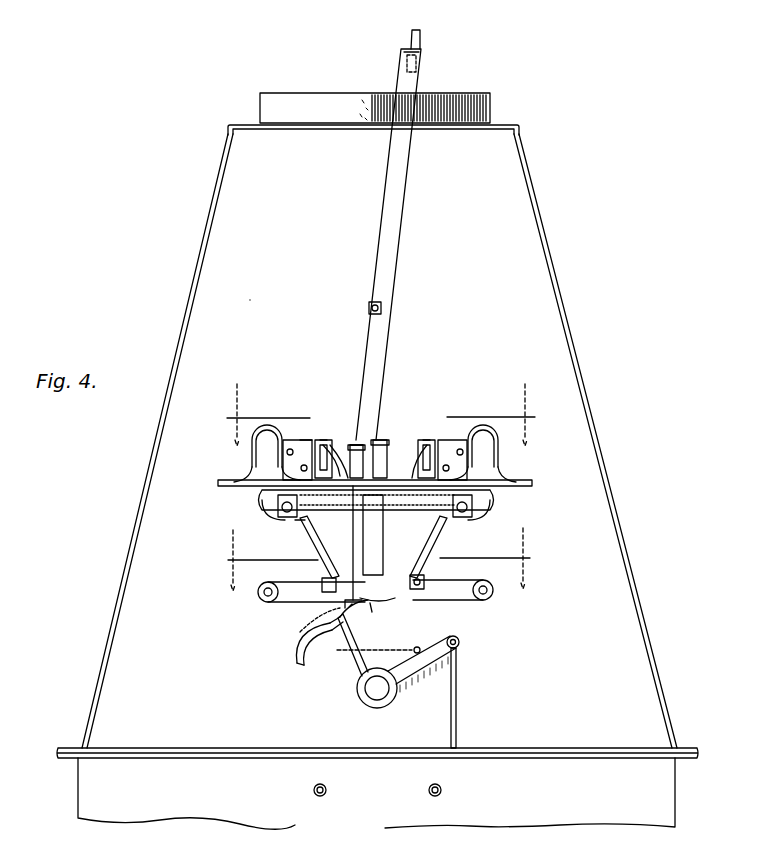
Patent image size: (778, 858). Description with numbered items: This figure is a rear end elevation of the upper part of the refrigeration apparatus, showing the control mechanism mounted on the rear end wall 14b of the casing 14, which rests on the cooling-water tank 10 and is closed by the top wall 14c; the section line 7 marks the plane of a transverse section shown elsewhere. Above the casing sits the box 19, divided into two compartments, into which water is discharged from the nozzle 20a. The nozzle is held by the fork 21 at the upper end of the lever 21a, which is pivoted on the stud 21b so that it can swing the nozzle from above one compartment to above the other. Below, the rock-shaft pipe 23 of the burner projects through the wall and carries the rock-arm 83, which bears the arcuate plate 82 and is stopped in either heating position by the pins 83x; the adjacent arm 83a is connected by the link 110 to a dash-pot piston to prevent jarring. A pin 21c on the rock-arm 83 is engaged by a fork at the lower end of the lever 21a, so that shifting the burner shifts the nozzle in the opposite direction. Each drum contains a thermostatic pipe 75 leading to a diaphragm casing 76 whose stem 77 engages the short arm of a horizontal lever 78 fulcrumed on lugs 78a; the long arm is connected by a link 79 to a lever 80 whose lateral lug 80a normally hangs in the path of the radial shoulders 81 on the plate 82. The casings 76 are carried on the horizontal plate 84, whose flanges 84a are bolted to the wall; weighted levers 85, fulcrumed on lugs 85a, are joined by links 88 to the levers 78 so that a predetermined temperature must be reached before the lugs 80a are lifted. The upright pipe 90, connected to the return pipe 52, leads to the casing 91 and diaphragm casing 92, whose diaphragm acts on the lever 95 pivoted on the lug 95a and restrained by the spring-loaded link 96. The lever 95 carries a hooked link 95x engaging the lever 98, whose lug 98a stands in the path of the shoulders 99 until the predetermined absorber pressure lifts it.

The section line 7— 7 is at (376, 415).
The tank 10 is at (60, 786).
The casing 14 is at (210, 173).
The rear end wall 14b is at (300, 256).
The top wall 14c is at (515, 110).
The box 19 is at (276, 93).
The nozzle 20a is at (421, 40).
The fork 21 is at (407, 50).
The lever 21a is at (394, 241).
The stud 21b is at (369, 309).
The pin 21c is at (323, 644).
The rock-shaft pipe 23 is at (370, 694).
The main return pipe 52 is at (446, 783).
The thermostatic pipe 75 is at (272, 425).
The diaphragm casing 76 is at (252, 477).
The stem 77 is at (262, 498).
The horizontal lever 78 is at (287, 517).
The lug 78a is at (505, 514).
The link 79 is at (320, 560).
The lever 80 is at (290, 585).
The lug 80a is at (418, 610).
The radial shoulder 81 is at (295, 650).
The arcuate plate 82 is at (300, 668).
The rock-arm 83 is at (356, 660).
The arm 83a is at (420, 672).
The stop pin 83x is at (378, 645).
The horizontal plate 84 is at (296, 438).
The flange 84a is at (298, 438).
The weighted lever 85 is at (323, 438).
The lug 85a is at (438, 438).
The link 88 is at (375, 438).
The upright pipe 90 is at (384, 550).
The casing 91 is at (383, 530).
The diaphragm casing 92 is at (392, 478).
The horizontal lever 95 is at (370, 440).
The lug 95a is at (378, 440).
The hooked link 95x is at (270, 537).
The link 96 is at (382, 440).
The lever 98 is at (292, 596).
The lug 98a is at (372, 606).
The shoulder 99 is at (318, 618).
The link 110 is at (460, 690).